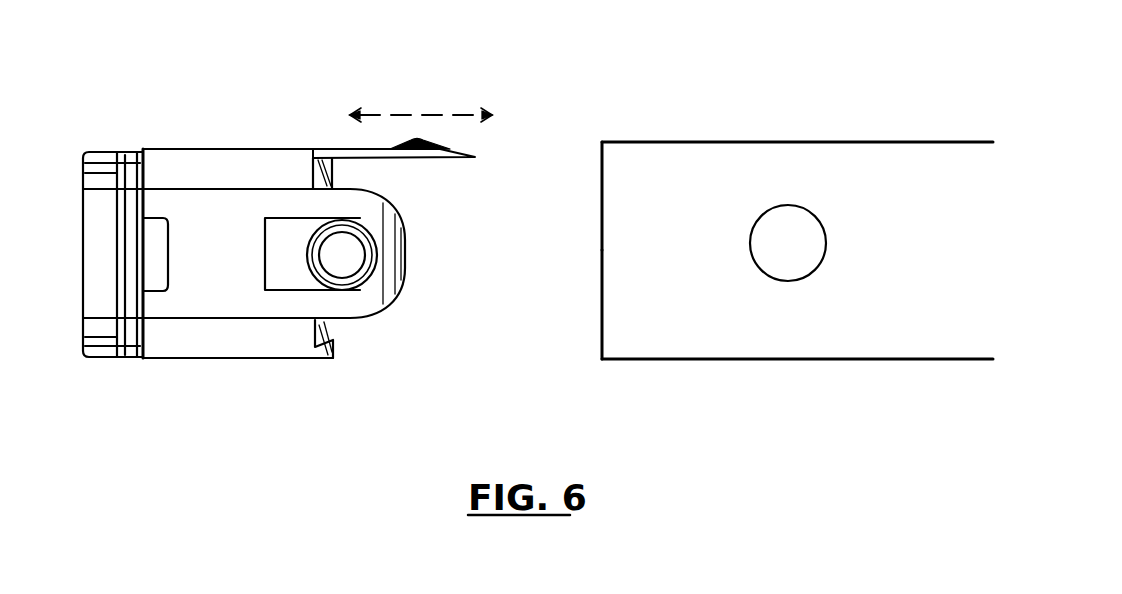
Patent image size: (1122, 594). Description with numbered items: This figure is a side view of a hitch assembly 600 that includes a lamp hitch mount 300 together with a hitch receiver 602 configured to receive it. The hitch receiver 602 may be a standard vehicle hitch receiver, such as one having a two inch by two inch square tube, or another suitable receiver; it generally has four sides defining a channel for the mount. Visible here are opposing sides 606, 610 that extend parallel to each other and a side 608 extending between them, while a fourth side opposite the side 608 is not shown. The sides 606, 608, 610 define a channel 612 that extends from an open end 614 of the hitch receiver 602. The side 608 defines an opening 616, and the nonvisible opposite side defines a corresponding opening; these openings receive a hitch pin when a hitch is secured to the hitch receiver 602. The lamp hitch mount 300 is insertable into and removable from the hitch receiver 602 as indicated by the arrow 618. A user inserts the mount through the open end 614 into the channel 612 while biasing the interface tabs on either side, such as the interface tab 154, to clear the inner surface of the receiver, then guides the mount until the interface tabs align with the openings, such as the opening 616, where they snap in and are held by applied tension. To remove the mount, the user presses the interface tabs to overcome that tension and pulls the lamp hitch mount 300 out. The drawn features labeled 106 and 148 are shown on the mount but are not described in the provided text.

The hitch assembly 600 is at (335, 76).
The blade 106 is at (331, 137).
The arrow 618 is at (447, 114).
The mounting block 148 is at (252, 287).
The interface tab 154 is at (352, 286).
The lamp hitch mount 300 is at (252, 387).
The hitch receiver 602 is at (731, 113).
The side 606 is at (864, 142).
The side 608 is at (913, 261).
The side 610 is at (787, 361).
The channel 612 is at (590, 328).
The open end 614 is at (600, 166).
The opening 616 is at (766, 272).